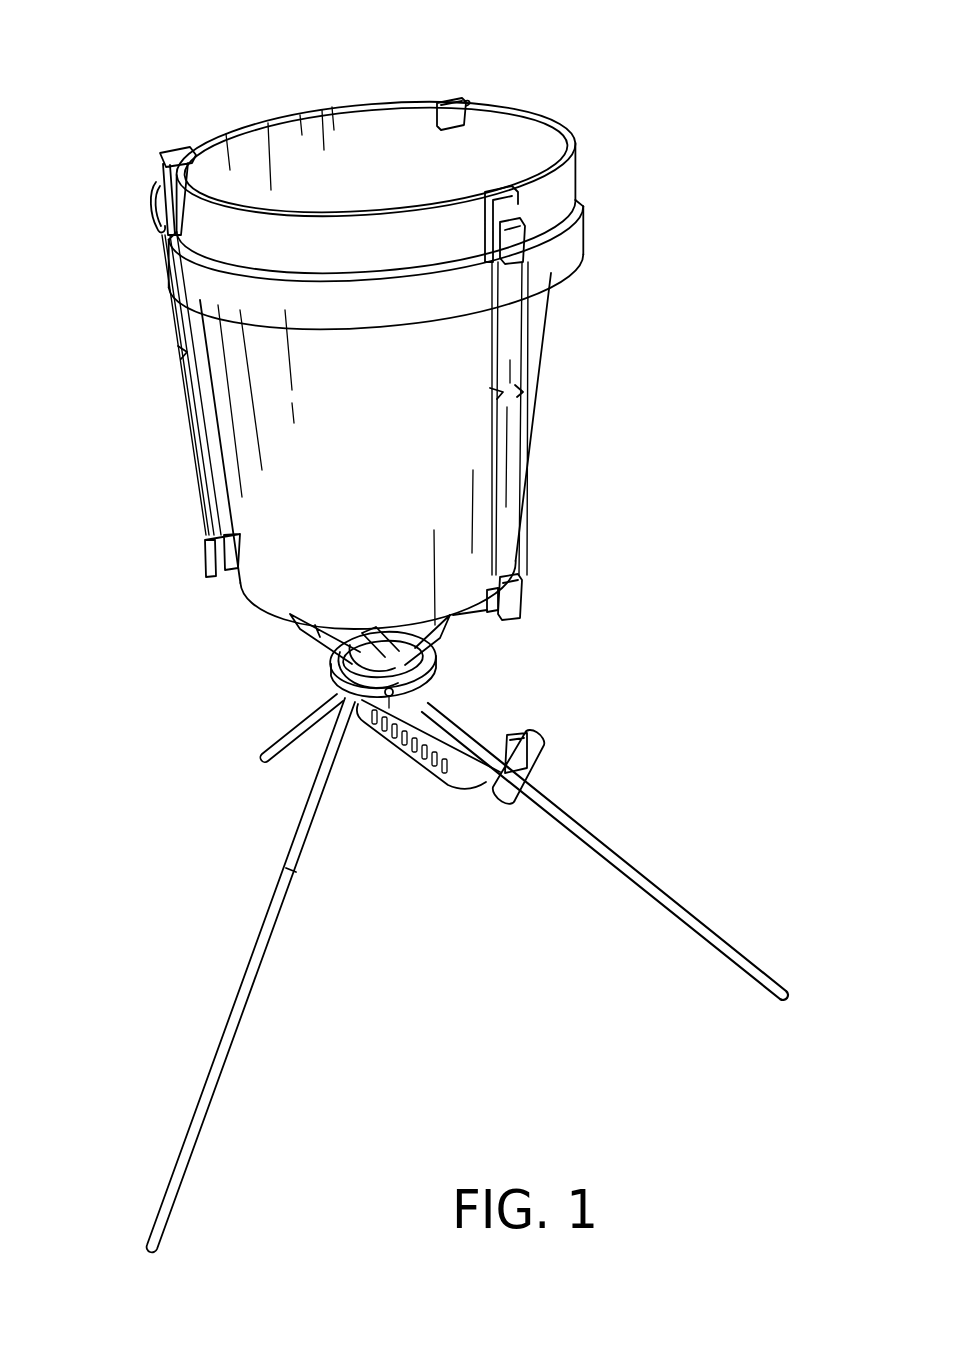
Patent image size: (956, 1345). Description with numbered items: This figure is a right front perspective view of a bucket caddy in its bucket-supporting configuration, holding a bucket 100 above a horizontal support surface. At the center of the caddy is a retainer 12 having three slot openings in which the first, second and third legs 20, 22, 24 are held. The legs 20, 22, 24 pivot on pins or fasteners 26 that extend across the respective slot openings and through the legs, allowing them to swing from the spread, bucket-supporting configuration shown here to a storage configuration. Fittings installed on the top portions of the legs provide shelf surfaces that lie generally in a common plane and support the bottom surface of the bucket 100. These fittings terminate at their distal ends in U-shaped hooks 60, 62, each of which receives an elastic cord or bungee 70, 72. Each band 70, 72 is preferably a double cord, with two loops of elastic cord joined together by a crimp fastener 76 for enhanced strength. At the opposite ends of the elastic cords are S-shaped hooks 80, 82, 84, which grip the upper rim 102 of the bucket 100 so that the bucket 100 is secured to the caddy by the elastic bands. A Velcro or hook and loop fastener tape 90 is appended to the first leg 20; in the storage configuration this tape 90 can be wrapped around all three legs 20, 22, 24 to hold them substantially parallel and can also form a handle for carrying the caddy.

The retainer 12 is at (338, 680).
The first leg 20 is at (640, 865).
The second leg 22 is at (276, 750).
The third leg 24 is at (246, 967).
The pin or fastener 26 is at (392, 697).
The U-shaped hook 60 is at (206, 566).
The U-shaped hook 62 is at (520, 600).
The elastic cord or bungee 70 is at (186, 458).
The elastic cord or bungee 72 is at (530, 468).
The crimp fastener 76 is at (181, 349).
The S-shaped hook 80 is at (167, 150).
The S-shaped hook 82 is at (520, 190).
The S-shaped hook 84 is at (455, 96).
The hook and loop fastener tape 90 is at (545, 745).
The bucket 100 is at (558, 322).
The upper rim 102 is at (556, 122).